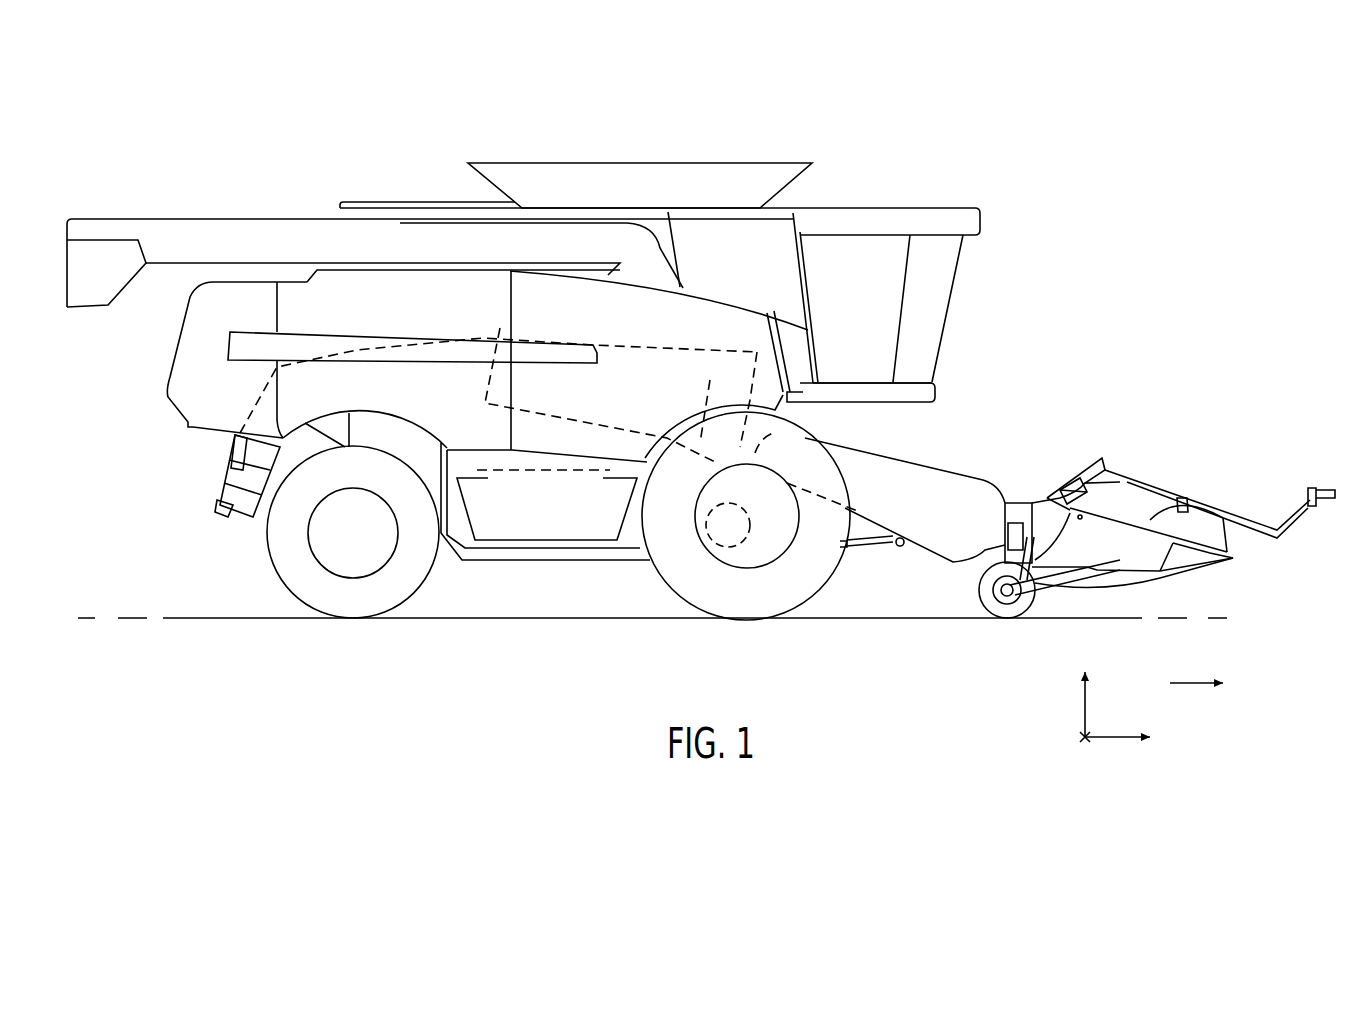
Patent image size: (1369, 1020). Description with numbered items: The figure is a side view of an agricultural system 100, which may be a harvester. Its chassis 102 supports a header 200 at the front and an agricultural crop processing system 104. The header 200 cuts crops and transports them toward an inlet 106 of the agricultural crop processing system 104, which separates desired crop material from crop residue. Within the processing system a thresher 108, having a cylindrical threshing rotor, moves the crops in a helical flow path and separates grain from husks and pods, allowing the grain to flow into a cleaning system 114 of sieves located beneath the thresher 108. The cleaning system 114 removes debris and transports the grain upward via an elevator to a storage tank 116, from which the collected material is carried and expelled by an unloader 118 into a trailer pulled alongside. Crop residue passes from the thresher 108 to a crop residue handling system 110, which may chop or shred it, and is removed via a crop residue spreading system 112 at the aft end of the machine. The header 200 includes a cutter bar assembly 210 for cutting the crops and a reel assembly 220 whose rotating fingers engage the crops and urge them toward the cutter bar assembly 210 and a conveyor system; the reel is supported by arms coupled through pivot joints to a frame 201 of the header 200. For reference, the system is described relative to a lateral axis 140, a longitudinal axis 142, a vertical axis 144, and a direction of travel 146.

The agricultural system 100 is at (980, 127).
The chassis 102 is at (492, 565).
The agricultural crop processing system 104 is at (622, 330).
The inlet 106 is at (818, 442).
The thresher 108 is at (648, 343).
The crop residue handling system 110 is at (327, 327).
The crop residue spreading system 112 is at (223, 490).
The cleaning system 114 is at (540, 473).
The storage tank 116 is at (622, 182).
The unloader 118 is at (178, 215).
The lateral axis 140 is at (1082, 738).
The longitudinal axis 142 is at (1110, 740).
The vertical axis 144 is at (1083, 710).
The direction of travel 146 is at (1190, 683).
The header 200 is at (1118, 442).
The frame 201 is at (1040, 517).
The cutter bar assembly 210 is at (1217, 580).
The reel assembly 220 is at (1213, 498).